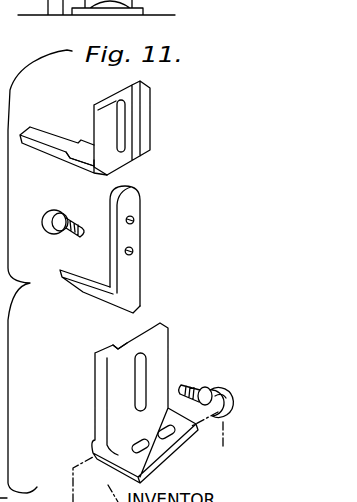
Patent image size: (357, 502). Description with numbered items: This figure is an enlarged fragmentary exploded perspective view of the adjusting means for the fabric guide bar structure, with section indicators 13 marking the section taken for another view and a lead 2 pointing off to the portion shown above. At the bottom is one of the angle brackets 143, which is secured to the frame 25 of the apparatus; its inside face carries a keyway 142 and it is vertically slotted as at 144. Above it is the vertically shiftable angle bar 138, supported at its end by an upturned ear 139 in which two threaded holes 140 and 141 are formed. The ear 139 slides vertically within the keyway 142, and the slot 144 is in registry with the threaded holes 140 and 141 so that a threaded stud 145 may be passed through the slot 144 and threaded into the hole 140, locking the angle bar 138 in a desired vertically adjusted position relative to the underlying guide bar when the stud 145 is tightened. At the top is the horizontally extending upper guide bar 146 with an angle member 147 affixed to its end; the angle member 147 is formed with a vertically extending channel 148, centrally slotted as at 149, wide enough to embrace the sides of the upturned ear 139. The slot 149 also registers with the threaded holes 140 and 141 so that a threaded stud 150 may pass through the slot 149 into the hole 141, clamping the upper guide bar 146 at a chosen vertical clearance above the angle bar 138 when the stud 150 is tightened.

The frame portion 2 is at (208, 0).
The section line indicator 13 is at (205, 286).
The frame 25 is at (93, 463).
The angle bar 138 is at (110, 298).
The upturned ears 139 is at (118, 253).
The threaded hole 140 is at (135, 220).
The threaded hole 141 is at (135, 251).
The keyway 142 is at (130, 336).
The angle bracket 143 is at (135, 393).
The vertical slot 144 is at (137, 390).
The threaded stud 145 is at (217, 377).
The upper guide bar 146 is at (50, 131).
The angle member 147 is at (79, 160).
The vertical channel 148 is at (109, 142).
The slot 149 is at (119, 133).
The threaded stud 150 is at (80, 240).